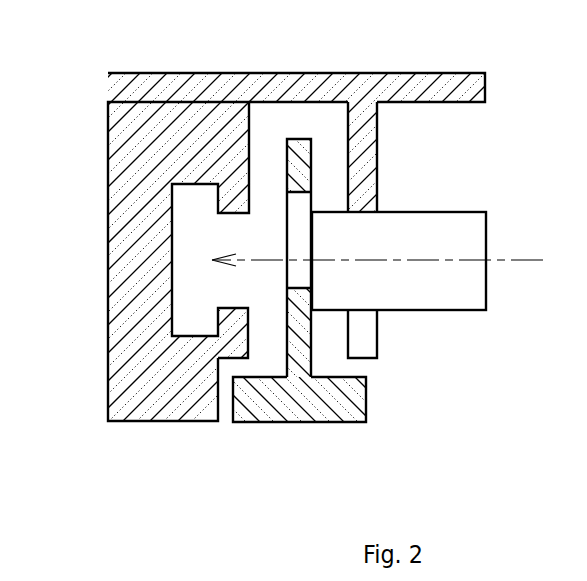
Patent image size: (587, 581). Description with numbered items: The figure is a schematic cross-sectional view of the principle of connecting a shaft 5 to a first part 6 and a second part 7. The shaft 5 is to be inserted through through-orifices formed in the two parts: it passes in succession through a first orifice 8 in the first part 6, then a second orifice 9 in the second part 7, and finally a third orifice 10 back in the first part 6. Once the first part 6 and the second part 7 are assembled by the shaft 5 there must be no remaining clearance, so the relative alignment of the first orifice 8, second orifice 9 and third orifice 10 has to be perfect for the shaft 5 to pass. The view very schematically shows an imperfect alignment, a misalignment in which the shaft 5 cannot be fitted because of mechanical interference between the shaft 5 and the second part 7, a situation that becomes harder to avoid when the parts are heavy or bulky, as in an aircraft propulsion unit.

The shaft 5 is at (468, 288).
The first part 6 is at (212, 110).
The second part 7 is at (297, 413).
The first orifice 8 is at (358, 206).
The second orifice 9 is at (298, 203).
The third orifice 10 is at (232, 213).